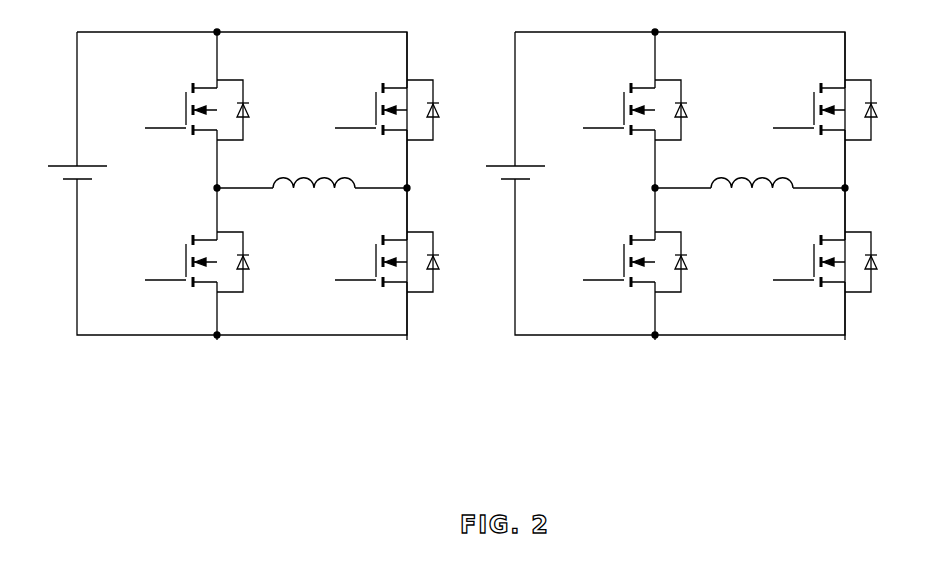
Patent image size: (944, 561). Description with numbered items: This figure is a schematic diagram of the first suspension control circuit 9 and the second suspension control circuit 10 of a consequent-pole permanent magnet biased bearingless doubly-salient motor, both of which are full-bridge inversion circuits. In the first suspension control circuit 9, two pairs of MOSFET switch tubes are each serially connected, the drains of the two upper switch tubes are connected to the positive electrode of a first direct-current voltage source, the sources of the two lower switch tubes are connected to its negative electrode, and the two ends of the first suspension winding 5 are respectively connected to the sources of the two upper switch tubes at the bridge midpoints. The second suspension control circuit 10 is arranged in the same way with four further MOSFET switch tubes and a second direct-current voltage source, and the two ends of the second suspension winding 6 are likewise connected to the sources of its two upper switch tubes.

The first suspension winding 5 is at (292, 183).
The second suspension winding 6 is at (730, 183).
The first suspension control circuit 9 is at (253, 335).
The second suspension control circuit 10 is at (702, 335).